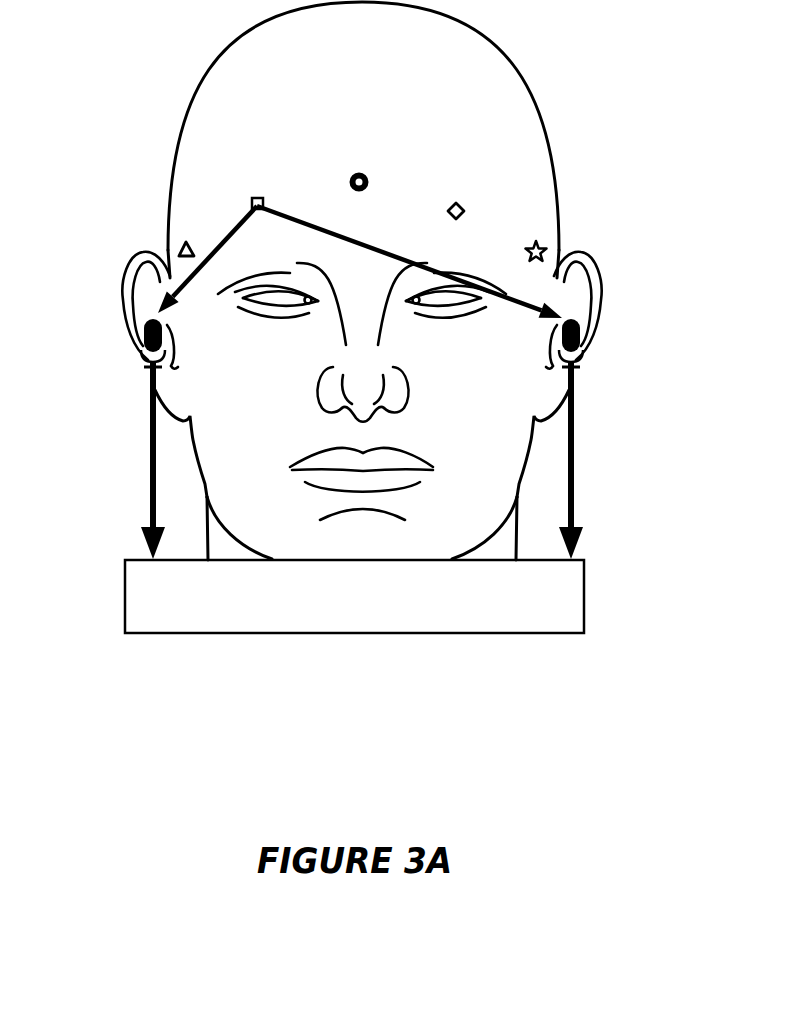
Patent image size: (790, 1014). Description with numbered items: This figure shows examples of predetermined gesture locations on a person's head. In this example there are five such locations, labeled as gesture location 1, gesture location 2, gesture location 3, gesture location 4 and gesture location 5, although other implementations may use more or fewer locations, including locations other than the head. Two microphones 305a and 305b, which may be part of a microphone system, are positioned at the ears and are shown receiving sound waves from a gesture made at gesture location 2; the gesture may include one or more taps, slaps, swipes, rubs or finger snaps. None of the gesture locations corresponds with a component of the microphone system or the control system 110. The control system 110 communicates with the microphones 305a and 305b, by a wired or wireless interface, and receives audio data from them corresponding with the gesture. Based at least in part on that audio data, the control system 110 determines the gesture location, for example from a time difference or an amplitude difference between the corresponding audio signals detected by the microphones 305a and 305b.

The predetermined gesture location 1 is at (186, 234).
The predetermined gesture location 2 is at (257, 189).
The predetermined gesture location 3 is at (359, 167).
The predetermined gesture location 4 is at (456, 197).
The predetermined gesture location 5 is at (536, 239).
The microphone 305a is at (142, 333).
The microphone 305b is at (586, 331).
The control system 110 is at (354, 596).